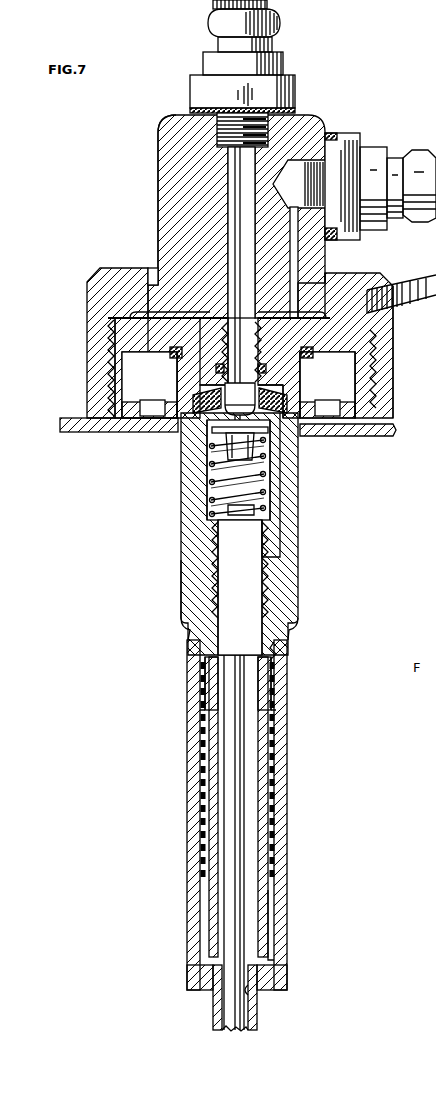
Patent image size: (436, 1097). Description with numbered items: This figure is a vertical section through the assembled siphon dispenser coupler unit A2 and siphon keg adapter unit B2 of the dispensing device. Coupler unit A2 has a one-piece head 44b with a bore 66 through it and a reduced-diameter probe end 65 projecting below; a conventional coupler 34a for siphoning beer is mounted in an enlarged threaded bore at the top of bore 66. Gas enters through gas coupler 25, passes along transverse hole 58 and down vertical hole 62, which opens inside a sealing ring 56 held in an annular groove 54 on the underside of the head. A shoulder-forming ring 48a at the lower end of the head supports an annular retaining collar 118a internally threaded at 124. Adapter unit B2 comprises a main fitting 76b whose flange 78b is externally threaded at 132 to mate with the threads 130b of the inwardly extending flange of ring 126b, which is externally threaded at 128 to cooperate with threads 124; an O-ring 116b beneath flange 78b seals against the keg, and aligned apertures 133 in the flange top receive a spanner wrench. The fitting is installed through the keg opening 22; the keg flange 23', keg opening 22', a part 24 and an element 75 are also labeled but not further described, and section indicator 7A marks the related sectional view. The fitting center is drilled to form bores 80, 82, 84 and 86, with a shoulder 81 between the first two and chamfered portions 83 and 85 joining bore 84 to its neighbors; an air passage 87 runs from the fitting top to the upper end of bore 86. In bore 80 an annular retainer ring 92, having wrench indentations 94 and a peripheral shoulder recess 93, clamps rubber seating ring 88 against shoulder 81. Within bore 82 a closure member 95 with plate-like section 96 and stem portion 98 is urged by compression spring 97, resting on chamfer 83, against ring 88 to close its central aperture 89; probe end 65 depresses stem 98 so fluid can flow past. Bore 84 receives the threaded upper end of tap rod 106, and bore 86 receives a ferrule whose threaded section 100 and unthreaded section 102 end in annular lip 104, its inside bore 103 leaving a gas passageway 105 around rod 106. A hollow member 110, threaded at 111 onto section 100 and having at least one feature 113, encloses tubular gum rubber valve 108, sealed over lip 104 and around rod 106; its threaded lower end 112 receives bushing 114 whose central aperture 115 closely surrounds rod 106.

The coupler 34a is at (283, 28).
The head 44b is at (155, 203).
The dispenser coupler unit A2 is at (165, 118).
The bore 66 is at (252, 172).
The transverse hole 58 is at (303, 162).
The gas coupler 25 is at (426, 223).
The vertical hole 62 is at (300, 258).
The shoulder-forming ring 48a is at (150, 278).
The internal threads 124 is at (107, 373).
The external threads 132 is at (106, 338).
The threads 130b is at (257, 345).
The recess 23' is at (152, 408).
The recess 22' is at (327, 408).
The upper bore 80 is at (178, 383).
The central aperture 89 is at (309, 385).
The retaining collar 118a is at (388, 362).
The flange 78b is at (382, 345).
The O-ring 116b is at (378, 375).
The external threads 128 is at (380, 392).
The apertures 133 is at (173, 345).
The sealing ring 56 is at (147, 316).
The annular groove 54 is at (152, 322).
The valve retainer ring 92 is at (203, 330).
The indentations 94 is at (222, 335).
The probe end 65 is at (236, 588).
The seal 75 is at (241, 367).
The stem portion 98 is at (240, 399).
The peripheral shoulder recess 93 is at (205, 409).
The keg opening 22 is at (303, 430).
The seating ring 88 is at (303, 423).
The ring 126b is at (108, 432).
The plate 24 is at (362, 440).
The main fitting 76b is at (186, 504).
The compression spring 97 is at (183, 486).
The chamfered portion 83 is at (273, 482).
The air passage 87 is at (284, 536).
The threaded bore 84 is at (215, 531).
The threaded bore 86 is at (286, 598).
The chamfered portion 85 is at (204, 552).
The keg adapter unit B2 is at (146, 600).
The shoulder 81 is at (228, 437).
The plate-like section 96 is at (222, 436).
The bore 82 is at (250, 478).
The closure member 95 is at (254, 462).
The inside bore 103 is at (212, 633).
The threaded ferrule section 100 is at (288, 641).
The internal threads 111 is at (278, 651).
The hollow member 110 is at (285, 806).
The cylindrical ferrule section 102 is at (270, 678).
The annular lip 104 is at (272, 706).
The gas passageway 105 is at (204, 678).
The rubber valve 108 is at (276, 770).
The cavity 113 is at (283, 913).
The annular bushing 114 is at (200, 996).
The lower end 112 is at (276, 985).
The tap rod 106 is at (260, 1020).
The central aperture 115 is at (256, 993).
The section line indicator 7A is at (76, 318).